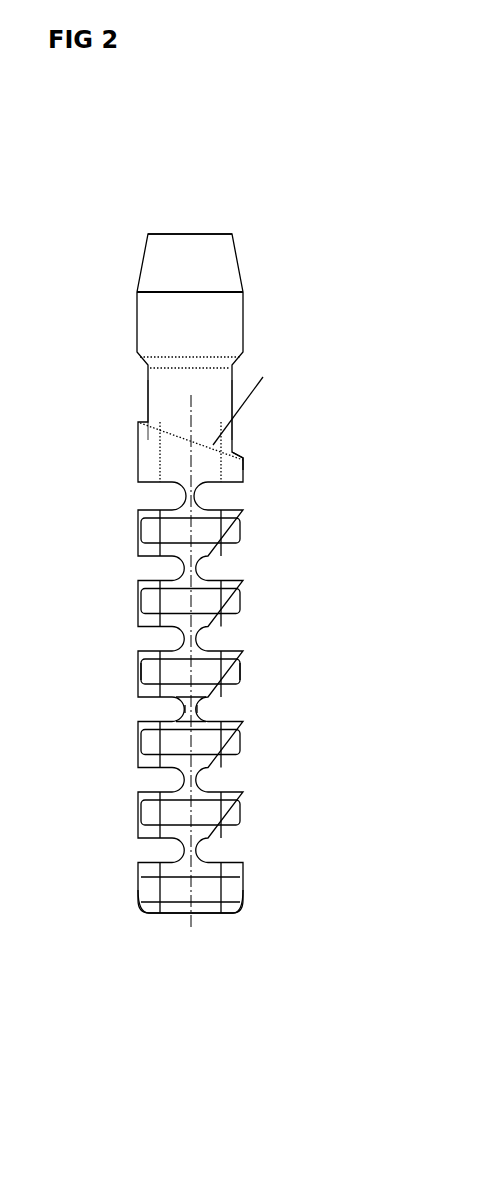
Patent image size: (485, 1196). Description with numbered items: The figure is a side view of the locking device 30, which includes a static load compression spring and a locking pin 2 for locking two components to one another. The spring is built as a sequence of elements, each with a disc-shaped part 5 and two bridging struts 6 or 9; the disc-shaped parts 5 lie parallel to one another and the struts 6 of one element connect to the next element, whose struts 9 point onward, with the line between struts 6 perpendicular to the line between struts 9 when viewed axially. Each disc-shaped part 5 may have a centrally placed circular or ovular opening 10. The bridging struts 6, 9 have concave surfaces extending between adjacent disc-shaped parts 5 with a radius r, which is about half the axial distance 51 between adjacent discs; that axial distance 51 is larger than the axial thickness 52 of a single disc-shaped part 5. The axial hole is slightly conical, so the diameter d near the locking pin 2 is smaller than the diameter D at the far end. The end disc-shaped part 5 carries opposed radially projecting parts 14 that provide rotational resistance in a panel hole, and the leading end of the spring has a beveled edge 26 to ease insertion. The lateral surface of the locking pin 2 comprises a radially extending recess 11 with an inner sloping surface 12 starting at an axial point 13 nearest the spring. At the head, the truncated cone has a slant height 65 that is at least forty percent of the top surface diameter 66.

The locking pin 2 is at (113, 331).
The disc-shaped part 5 is at (137, 653).
The bridging struts 6 is at (193, 717).
The bridging struts 9 is at (147, 675).
The central opening 10 is at (205, 692).
The radially extending recess 11 is at (145, 385).
The inner sloping surface 12 is at (167, 422).
The axial point 13 is at (240, 456).
The radially projecting parts 14 is at (138, 890).
The beveled edge 26 is at (150, 916).
The locking device 30 is at (289, 267).
The axial distance 51 is at (137, 720).
The axial thickness 52 is at (243, 699).
The slant height 65 is at (137, 292).
The top surface diameter 66 is at (232, 234).
The diameter d is at (220, 472).
The diameter D is at (158, 890).
The radius r is at (203, 710).